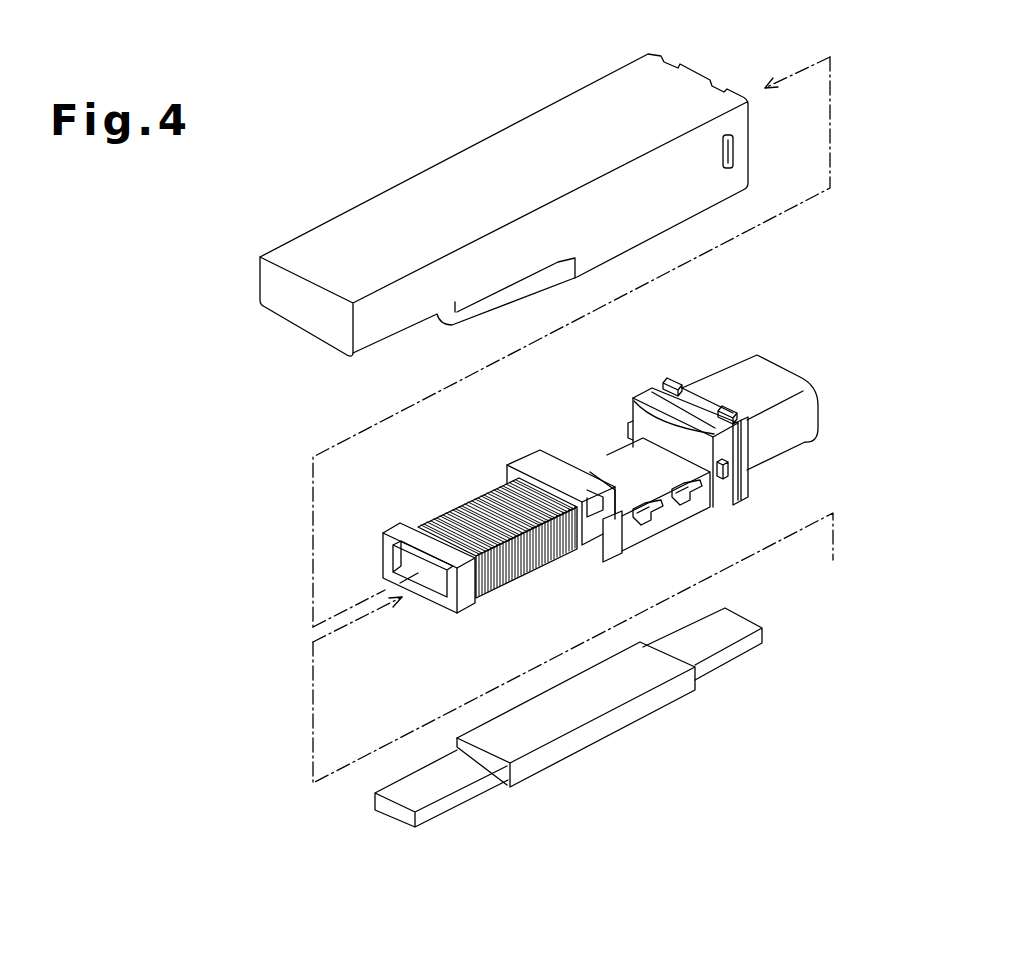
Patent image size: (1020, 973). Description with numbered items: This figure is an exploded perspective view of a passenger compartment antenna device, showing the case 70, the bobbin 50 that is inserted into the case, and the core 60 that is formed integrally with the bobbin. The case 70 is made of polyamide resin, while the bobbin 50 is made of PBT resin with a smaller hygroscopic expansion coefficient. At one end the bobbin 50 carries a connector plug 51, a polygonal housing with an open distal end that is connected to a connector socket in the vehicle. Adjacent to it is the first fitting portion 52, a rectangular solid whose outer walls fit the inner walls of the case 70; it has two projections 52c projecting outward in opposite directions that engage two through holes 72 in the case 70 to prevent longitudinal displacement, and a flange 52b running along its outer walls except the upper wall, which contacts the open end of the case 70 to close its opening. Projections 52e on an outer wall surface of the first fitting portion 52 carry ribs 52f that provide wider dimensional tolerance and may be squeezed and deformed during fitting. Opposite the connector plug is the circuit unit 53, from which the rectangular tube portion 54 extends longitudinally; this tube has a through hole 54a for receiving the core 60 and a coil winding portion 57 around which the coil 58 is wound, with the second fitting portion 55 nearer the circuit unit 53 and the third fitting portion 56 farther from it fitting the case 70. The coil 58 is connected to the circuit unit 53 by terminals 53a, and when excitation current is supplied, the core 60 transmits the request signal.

The bobbin 50 is at (660, 368).
The connector plug 51 is at (793, 447).
The first fitting portion 52 is at (688, 438).
The flange 52b is at (748, 487).
The projections 52c is at (724, 480).
The projections 52e is at (634, 403).
The ribs 52f is at (722, 407).
The circuit unit 53 is at (636, 489).
The terminals 53a is at (672, 492).
The rectangular tube portion 54 is at (496, 447).
The through hole 54a is at (395, 556).
The second fitting portion 55 is at (506, 464).
The third fitting portion 56 is at (409, 528).
The coil winding portion 57 is at (496, 526).
The coil 58 is at (523, 538).
The core 60 is at (625, 727).
The case 70 is at (504, 205).
The through holes 72 is at (725, 153).